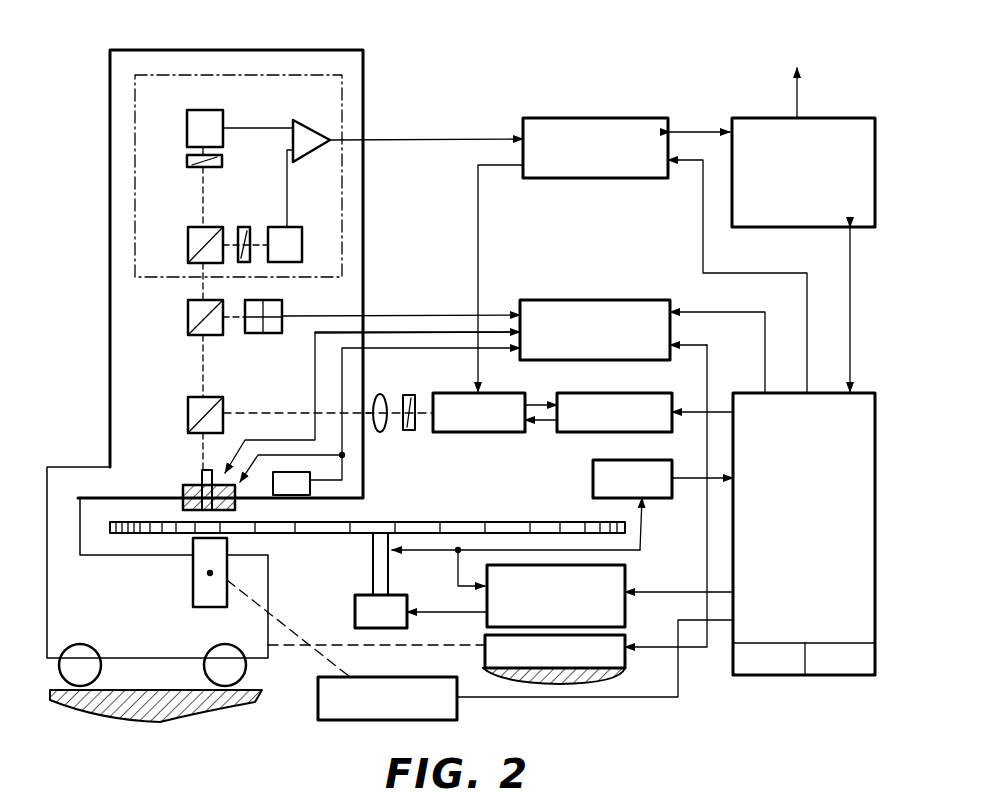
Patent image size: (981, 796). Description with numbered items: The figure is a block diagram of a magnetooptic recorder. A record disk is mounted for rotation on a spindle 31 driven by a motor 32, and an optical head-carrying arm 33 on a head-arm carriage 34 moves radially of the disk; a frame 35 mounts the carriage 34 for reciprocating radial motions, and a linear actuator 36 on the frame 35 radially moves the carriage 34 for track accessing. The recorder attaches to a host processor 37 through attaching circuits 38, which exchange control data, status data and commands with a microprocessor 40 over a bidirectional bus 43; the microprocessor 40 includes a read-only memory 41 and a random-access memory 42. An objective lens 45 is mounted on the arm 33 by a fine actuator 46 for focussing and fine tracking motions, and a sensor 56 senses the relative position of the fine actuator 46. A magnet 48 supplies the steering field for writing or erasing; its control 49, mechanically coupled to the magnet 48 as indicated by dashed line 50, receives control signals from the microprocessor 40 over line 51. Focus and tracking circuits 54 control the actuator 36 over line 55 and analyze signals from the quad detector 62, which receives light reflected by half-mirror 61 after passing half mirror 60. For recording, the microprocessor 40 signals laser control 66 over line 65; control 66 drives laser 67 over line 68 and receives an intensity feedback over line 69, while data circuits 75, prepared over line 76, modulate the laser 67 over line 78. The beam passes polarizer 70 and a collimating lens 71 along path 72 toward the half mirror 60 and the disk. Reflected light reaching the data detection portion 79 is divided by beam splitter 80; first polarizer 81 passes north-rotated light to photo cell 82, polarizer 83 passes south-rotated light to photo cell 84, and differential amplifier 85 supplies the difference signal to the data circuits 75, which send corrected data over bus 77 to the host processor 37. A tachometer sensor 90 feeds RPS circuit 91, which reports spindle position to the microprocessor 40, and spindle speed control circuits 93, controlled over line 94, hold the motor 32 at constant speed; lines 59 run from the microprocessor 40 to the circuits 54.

The spindle 31 is at (373, 560).
The motor 32 is at (355, 605).
The optical head-carrying arm 33 is at (108, 192).
The head-arm carriage 34 is at (250, 672).
The frame 35 is at (180, 686).
The linear actuator 36 is at (485, 638).
The host processor 37 is at (722, 65).
The attaching circuits 38 is at (862, 100).
The microprocessor 40 is at (752, 388).
The read-only memory (ROM) 41 is at (836, 690).
The random-access memory (RAM) 42 is at (770, 690).
The bidirectional bus 43 is at (850, 258).
The objective lens 45 is at (200, 470).
The fine actuator 46 is at (184, 490).
The magnet 48 is at (190, 575).
The magnet control 49 is at (457, 712).
The dashed line 50 is at (295, 625).
The line 51 is at (700, 677).
The focus and tracking circuits 54 is at (612, 300).
The line 55 is at (710, 360).
The sensor 56 is at (295, 495).
The signal line 59 is at (752, 305).
The half mirror 60 is at (188, 408).
The half-mirror 61 is at (188, 310).
The quad detector 62 is at (258, 333).
The line 65 is at (700, 410).
The laser control 66 is at (613, 393).
The laser 67 is at (468, 432).
The line 68 is at (552, 428).
The line 69 is at (530, 400).
The polarizer 70 is at (410, 432).
The collimating lens 71 is at (382, 432).
The optical path 72 is at (262, 412).
The data circuits 75 is at (624, 102).
The line 76 is at (703, 210).
The bus 77 is at (700, 130).
The line 78 is at (478, 188).
The data detection portion 79 is at (245, 88).
The half-mirror or beam splitter 80 is at (188, 240).
The first polarizer 81 is at (262, 210).
The photo cell 82 is at (302, 230).
The polarizer 83 is at (188, 165).
The photo cell 84 is at (187, 115).
The differential amplifier 85 is at (322, 110).
The tachometer or emitter sensor 90 is at (422, 552).
The RPS circuit 91 is at (595, 482).
The spindle speed control circuits 93 is at (622, 565).
The line 94 is at (675, 592).